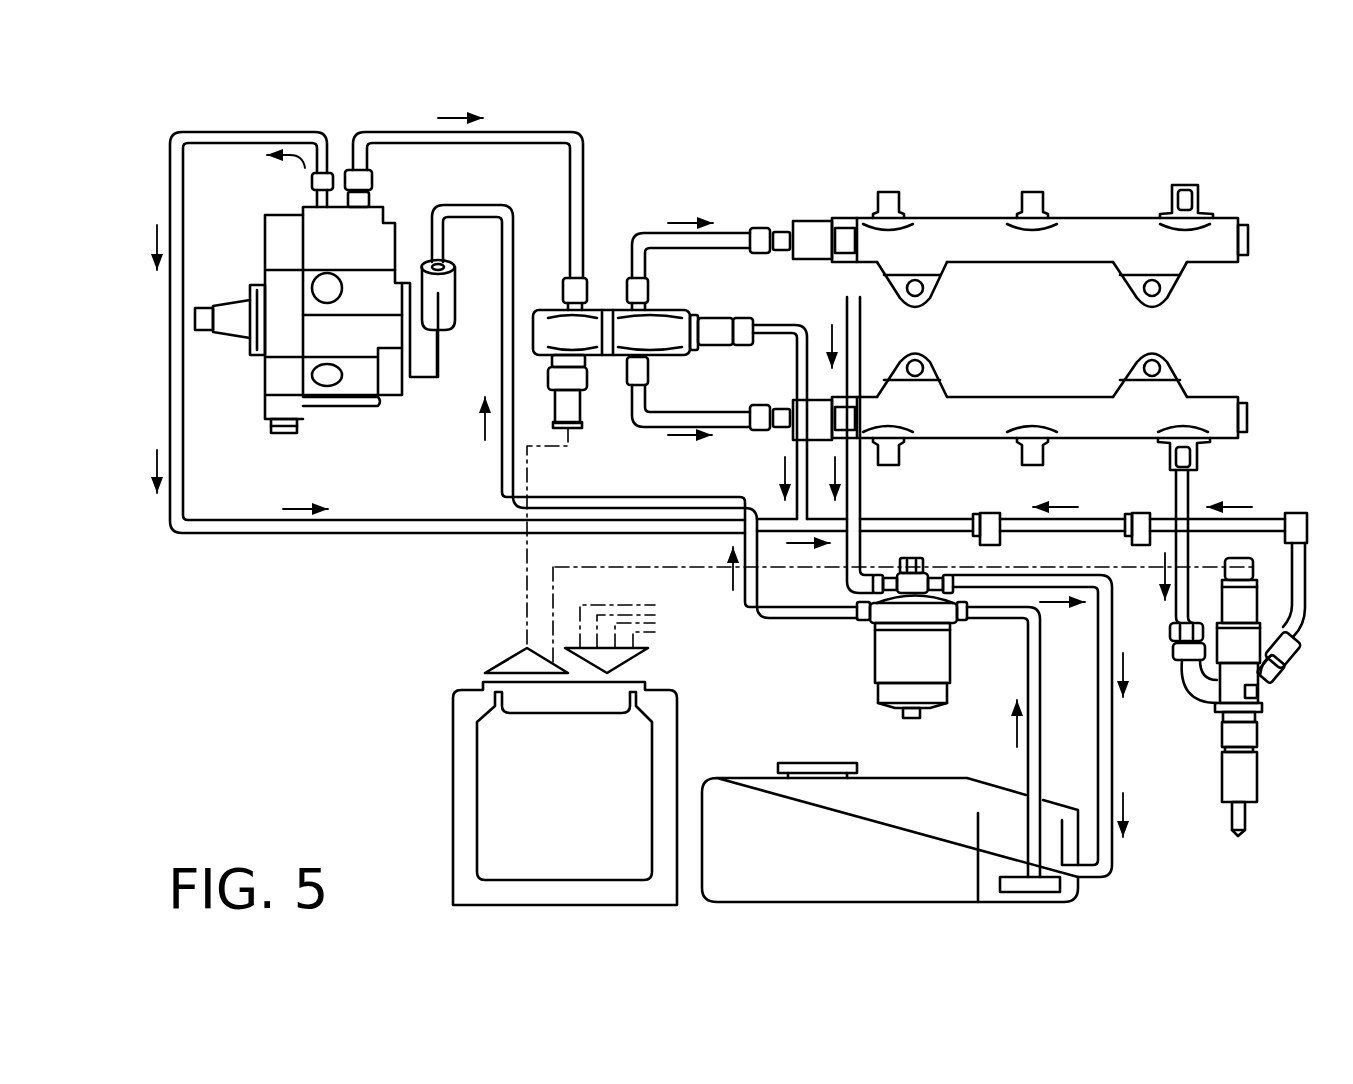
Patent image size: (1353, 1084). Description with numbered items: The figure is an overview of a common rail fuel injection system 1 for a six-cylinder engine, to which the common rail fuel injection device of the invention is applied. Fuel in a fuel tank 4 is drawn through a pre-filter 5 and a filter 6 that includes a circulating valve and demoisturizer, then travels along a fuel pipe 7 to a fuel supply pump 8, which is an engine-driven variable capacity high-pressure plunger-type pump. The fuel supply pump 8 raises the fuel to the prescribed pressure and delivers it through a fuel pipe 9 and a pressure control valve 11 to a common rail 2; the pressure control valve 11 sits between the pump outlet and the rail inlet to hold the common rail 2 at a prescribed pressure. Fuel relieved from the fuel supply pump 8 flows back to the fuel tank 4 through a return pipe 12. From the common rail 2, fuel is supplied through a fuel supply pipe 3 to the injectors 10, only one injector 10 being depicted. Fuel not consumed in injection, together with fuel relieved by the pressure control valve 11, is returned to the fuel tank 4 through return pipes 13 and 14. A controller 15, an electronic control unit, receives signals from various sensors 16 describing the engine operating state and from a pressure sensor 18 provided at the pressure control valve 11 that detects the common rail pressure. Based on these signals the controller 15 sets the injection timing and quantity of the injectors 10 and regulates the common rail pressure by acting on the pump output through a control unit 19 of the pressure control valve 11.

The common rail fuel injection system 1 is at (1184, 170).
The common rail 2 is at (1062, 382).
The fuel supply pipe 3 is at (1178, 485).
The fuel tank 4 is at (840, 878).
The pre-filter 5 is at (1018, 890).
The filter 6 is at (885, 660).
The fuel pipe 7 is at (690, 497).
The fuel supply pump 8 is at (357, 401).
The fuel pipe 9 is at (527, 131).
The injector 10 is at (1270, 760).
The pressure control valve 11 is at (672, 308).
The return pipe 12 is at (175, 357).
The return pipe 13 is at (938, 525).
The return pipe 14 is at (780, 325).
The controller 15 is at (488, 797).
The sensors 16 is at (657, 595).
The pressure sensor 18 is at (843, 245).
The control unit 19 is at (570, 382).